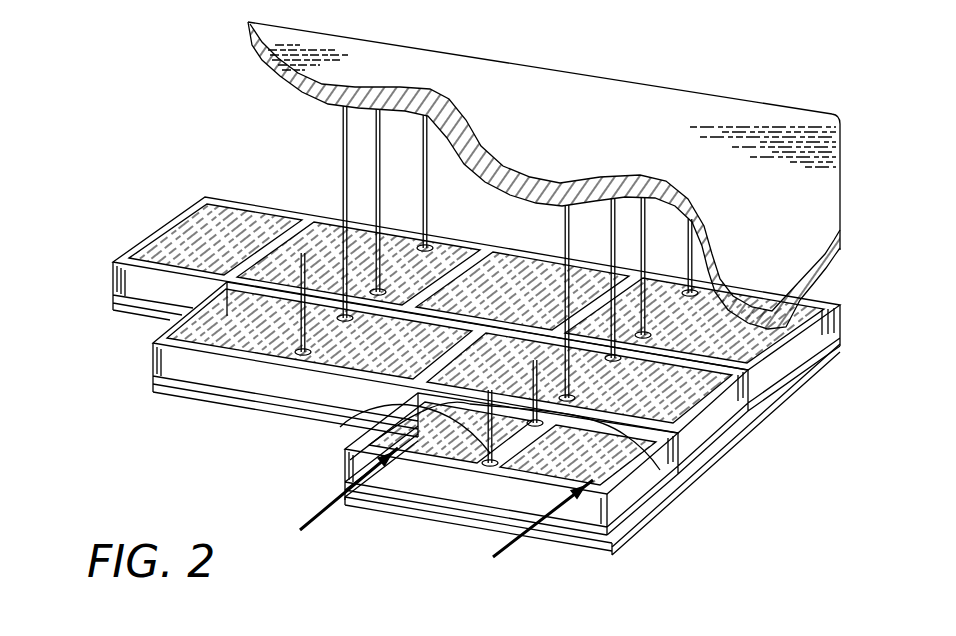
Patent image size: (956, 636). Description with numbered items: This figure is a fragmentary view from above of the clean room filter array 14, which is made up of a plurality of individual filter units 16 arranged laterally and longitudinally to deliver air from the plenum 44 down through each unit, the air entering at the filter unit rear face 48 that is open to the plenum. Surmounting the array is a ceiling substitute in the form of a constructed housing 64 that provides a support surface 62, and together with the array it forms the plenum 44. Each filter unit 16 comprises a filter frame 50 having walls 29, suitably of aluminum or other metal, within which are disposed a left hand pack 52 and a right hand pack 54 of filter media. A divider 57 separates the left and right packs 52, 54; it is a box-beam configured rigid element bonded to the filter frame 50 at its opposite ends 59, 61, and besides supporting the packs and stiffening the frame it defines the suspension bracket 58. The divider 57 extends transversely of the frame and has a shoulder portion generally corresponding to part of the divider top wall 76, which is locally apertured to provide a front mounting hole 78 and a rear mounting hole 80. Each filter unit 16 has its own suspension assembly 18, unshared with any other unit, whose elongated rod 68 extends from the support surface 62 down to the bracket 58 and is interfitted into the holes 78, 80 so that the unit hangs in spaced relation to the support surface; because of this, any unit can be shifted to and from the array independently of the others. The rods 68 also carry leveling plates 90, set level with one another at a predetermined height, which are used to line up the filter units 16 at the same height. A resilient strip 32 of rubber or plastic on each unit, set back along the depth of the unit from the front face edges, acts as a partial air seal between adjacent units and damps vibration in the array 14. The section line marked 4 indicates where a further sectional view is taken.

The section line 4- 4 is at (446, 512).
The clean room filter array 14 is at (737, 463).
The filter unit 16 is at (178, 390).
The suspension assembly 18 is at (335, 163).
The filter unit wall 29 is at (650, 534).
The strip 32 is at (443, 507).
The plenum 44 is at (290, 113).
The filter unit rear face 48 is at (210, 236).
The filter frame 50 is at (237, 380).
The left hand pack 52 is at (461, 358).
The right hand pack 54 is at (647, 377).
The divider 57 is at (625, 492).
The suspension bracket 58 is at (425, 250).
The divider end 59 is at (718, 262).
The divider end 61 is at (740, 285).
The support surface 62 is at (265, 68).
The constructed housing 64 is at (550, 110).
The rod 68 is at (605, 233).
The divider top wall 76 is at (340, 427).
The front mounting hole 78 is at (350, 460).
The rear mounting hole 80 is at (630, 497).
The leveling plate 90 is at (690, 294).